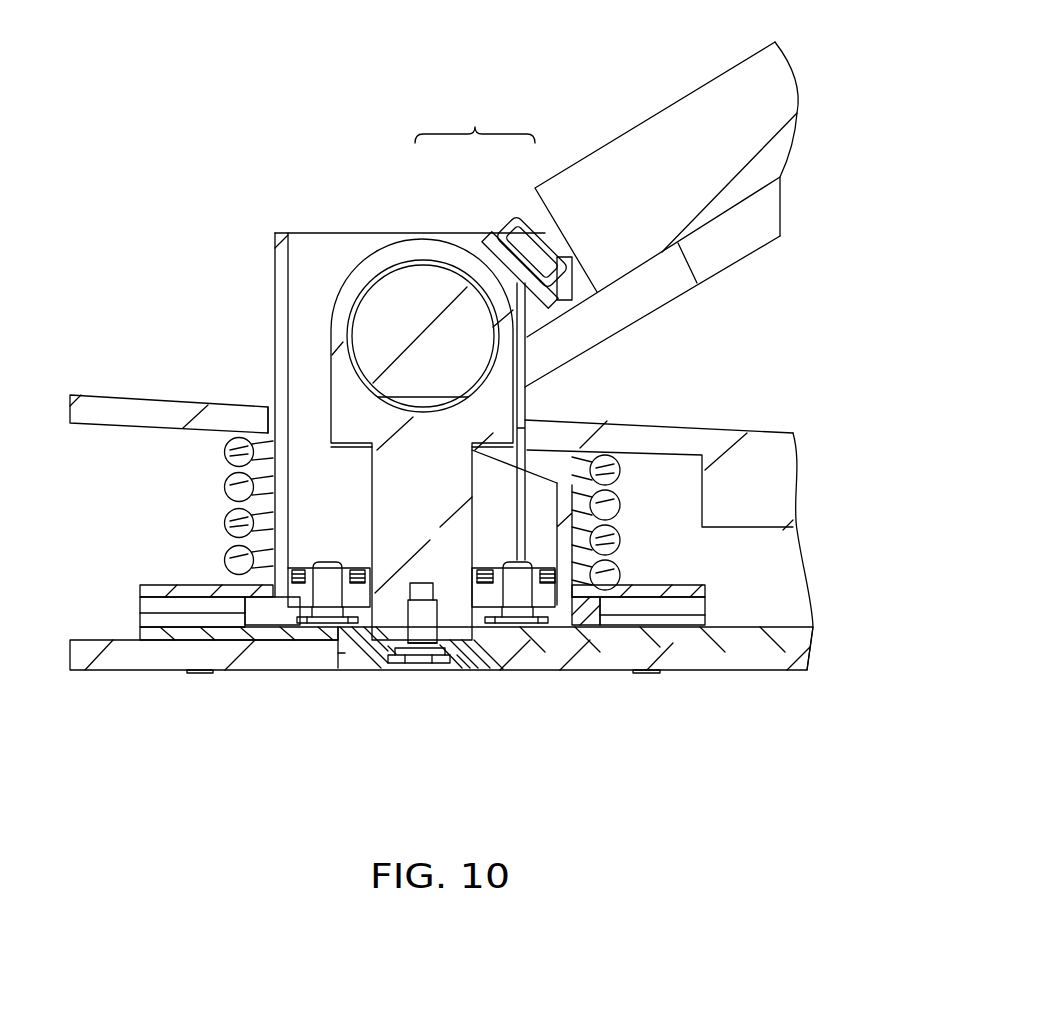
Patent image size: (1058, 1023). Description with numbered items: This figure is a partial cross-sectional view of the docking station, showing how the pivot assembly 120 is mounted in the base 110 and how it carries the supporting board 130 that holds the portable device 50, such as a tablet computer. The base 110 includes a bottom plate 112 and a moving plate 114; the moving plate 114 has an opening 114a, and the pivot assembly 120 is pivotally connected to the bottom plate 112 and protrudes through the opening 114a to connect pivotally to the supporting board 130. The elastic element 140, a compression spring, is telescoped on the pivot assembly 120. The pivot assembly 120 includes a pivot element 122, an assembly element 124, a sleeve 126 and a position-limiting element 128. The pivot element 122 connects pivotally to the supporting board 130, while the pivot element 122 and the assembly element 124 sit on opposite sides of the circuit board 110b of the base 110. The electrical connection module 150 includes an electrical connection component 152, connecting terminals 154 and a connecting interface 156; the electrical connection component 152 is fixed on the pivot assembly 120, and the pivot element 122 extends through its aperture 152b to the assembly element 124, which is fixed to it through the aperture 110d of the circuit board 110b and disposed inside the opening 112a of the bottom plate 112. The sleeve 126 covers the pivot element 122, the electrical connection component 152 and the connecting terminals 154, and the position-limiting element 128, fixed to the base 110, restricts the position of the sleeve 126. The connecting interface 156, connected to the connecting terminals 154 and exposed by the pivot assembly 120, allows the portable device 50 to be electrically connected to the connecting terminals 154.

The portable device 50 is at (684, 128).
The base 110 is at (232, 683).
The circuit board 110b is at (280, 641).
The aperture 110d is at (337, 654).
The bottom plate 112 is at (128, 662).
The opening 112a is at (346, 633).
The moving plate 114 is at (105, 408).
The opening 114a is at (272, 420).
The pivot assembly 120 is at (252, 262).
The pivot element 122 is at (385, 472).
The assembly element 124 is at (478, 658).
The sleeve 126 is at (278, 300).
The position-limiting element 128 is at (693, 588).
The supporting board 130 is at (723, 250).
The elastic element 140 is at (224, 493).
The electrical connection module 150 is at (475, 123).
The electrical connection component 152 is at (488, 568).
The aperture 152b is at (368, 577).
The connecting terminals 154 is at (516, 310).
The connecting interface 156 is at (540, 232).